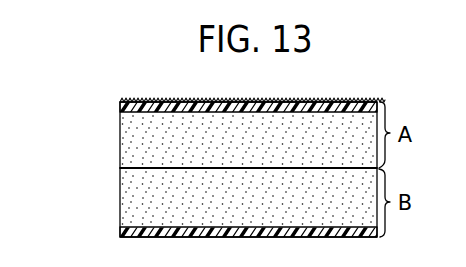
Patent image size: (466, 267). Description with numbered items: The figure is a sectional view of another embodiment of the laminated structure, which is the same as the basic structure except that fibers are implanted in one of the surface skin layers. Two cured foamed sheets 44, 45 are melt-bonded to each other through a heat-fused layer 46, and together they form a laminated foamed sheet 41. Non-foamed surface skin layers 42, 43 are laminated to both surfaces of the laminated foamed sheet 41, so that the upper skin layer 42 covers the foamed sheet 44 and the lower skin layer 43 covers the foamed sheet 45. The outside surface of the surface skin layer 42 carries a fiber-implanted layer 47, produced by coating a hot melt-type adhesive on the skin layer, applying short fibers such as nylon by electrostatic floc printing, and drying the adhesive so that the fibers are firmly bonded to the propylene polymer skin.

The laminated foamed sheet 41 is at (63, 113).
The surface skin layer 42 is at (118, 103).
The surface skin layer 43 is at (119, 229).
The cured foamed sheet 44 is at (122, 146).
The cured foamed sheet 45 is at (122, 206).
The heat-fused layer 46 is at (379, 169).
The fiber-implanted layer 47 is at (146, 98).